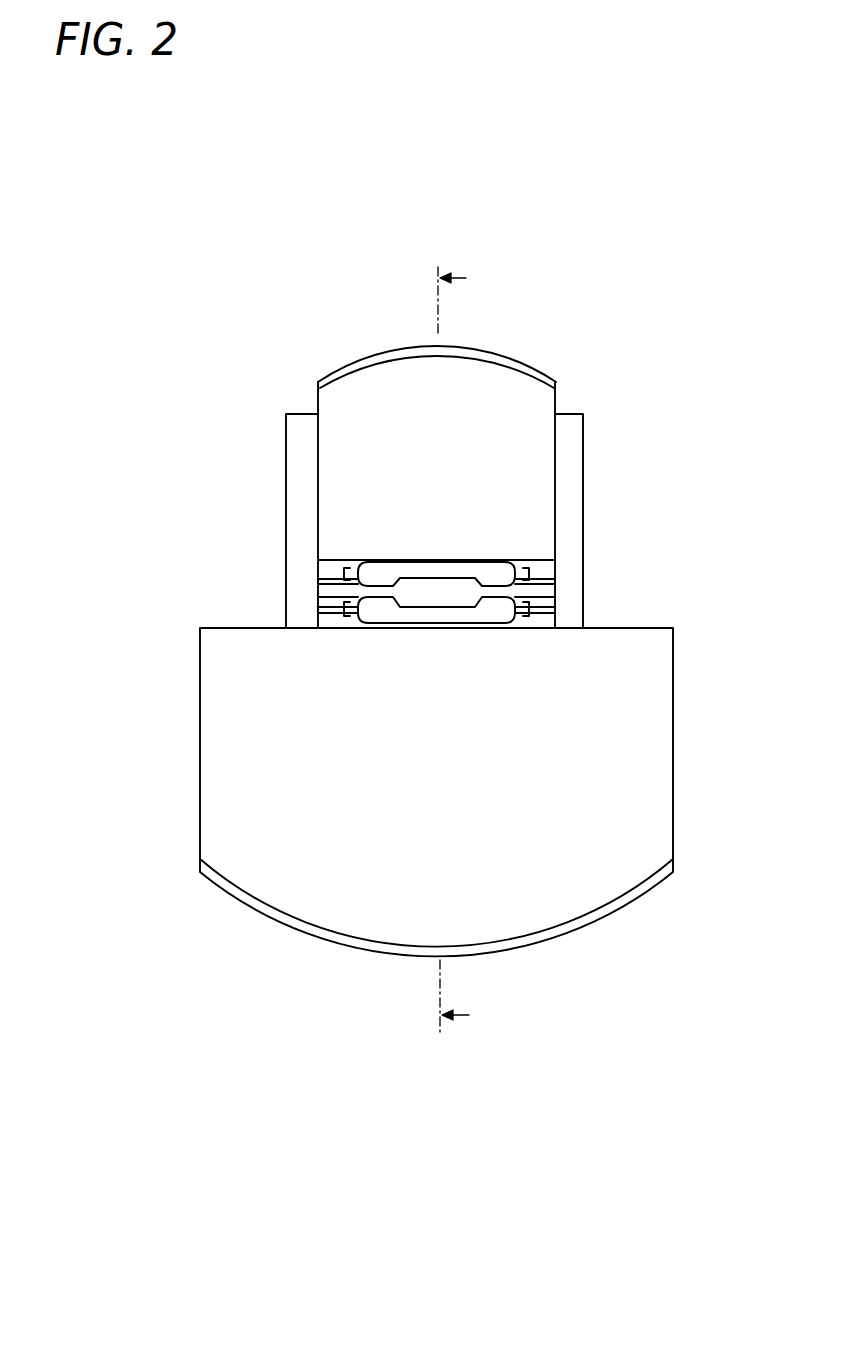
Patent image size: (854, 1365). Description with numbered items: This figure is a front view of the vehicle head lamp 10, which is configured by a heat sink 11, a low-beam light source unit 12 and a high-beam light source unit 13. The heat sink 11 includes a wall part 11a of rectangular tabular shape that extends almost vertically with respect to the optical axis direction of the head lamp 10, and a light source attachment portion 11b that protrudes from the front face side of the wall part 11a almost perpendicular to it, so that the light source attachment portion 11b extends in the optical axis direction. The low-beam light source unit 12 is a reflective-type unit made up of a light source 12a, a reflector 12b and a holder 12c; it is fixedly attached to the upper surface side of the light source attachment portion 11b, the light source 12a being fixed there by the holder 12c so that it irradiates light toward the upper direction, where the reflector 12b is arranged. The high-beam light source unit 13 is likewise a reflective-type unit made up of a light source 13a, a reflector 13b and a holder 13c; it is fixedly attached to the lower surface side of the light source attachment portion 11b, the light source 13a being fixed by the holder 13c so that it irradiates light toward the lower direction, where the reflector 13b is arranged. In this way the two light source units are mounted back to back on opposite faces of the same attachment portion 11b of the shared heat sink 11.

The vehicle head lamp 10 is at (694, 244).
The heat sink 11 is at (590, 453).
The wall part 11a is at (578, 504).
The light source attachment portion 11b is at (557, 587).
The low-beam light source unit 12 is at (548, 148).
The light source 12a is at (433, 565).
The reflector 12b is at (392, 350).
The holder 12c is at (487, 565).
The high-beam light source unit 13 is at (350, 1152).
The light source 13a is at (431, 622).
The reflector 13b is at (405, 957).
The holder 13c is at (483, 622).